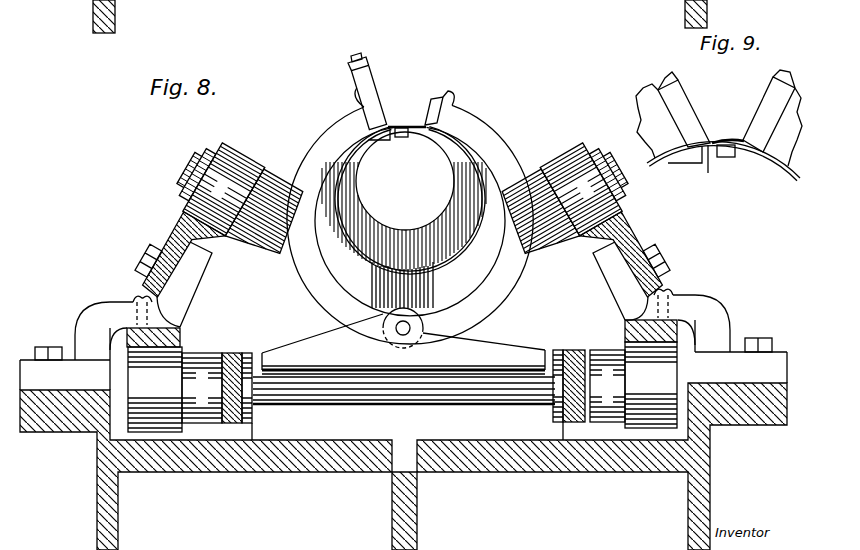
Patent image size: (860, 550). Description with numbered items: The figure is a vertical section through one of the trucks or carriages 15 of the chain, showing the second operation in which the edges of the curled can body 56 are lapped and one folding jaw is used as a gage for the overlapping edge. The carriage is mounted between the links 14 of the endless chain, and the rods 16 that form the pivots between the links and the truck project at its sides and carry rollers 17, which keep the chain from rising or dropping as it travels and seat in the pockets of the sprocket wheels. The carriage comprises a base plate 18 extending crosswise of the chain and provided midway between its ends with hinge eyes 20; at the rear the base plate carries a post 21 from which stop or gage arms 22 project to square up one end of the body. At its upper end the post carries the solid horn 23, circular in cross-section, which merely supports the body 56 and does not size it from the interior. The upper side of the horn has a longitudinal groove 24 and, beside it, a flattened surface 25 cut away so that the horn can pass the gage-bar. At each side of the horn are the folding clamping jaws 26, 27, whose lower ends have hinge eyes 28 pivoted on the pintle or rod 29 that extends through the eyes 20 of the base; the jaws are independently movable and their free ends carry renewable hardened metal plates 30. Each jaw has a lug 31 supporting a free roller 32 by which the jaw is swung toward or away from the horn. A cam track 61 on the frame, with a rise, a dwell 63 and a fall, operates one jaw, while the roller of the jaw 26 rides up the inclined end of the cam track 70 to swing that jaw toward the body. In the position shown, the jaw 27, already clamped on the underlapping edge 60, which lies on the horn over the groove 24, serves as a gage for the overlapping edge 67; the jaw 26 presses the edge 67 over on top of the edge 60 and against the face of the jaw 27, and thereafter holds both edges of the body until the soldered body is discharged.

In FIG. 8, the links 14 is at (254, 418).
In FIG. 8, the trucks or carriages 15 is at (282, 347).
In FIG. 8, the rods 16 is at (399, 389).
In FIG. 8, the rollers 17 is at (402, 387).
In FIG. 8, the base plate 18 is at (403, 357).
In FIG. 8, the hinge eyes 20 is at (424, 332).
In FIG. 8, the post 21 is at (418, 284).
In FIG. 8, the stop or gage arms 22 is at (346, 216).
In FIG. 8, the solid horn 23 is at (405, 181).
In FIG. 9, the solid horn 23 is at (781, 168).
In FIG. 8, the longitudinal groove 24 is at (407, 134).
In FIG. 9, the longitudinal groove 24 is at (727, 153).
In FIG. 8, the flattened surface 25 is at (380, 143).
In FIG. 8, the folding clamping jaw 26 is at (332, 113).
In FIG. 9, the folding clamping jaw 26 is at (645, 84).
In FIG. 8, the folding clamping jaw 27 is at (478, 113).
In FIG. 9, the folding clamping jaw 27 is at (779, 80).
In FIG. 8, the hinge eyes 28 is at (378, 318).
In FIG. 8, the pintle or rod 29 is at (397, 329).
In FIG. 8, the hardened metal plates 30 is at (378, 104).
In FIG. 9, the hardened metal plates 30 is at (684, 108).
In FIG. 8, the lug 31 is at (263, 230).
In FIG. 8, the free roller 32 is at (240, 156).
In FIG. 8, the partially-formed cylinder or body 56 is at (364, 252).
In FIG. 9, the partially-formed cylinder or body 56 is at (650, 166).
In FIG. 9, the underlapping edge 60 is at (708, 174).
In FIG. 8, the cam track 61 is at (622, 222).
In FIG. 8, the dwell 63 is at (596, 252).
In FIG. 8, the overlapping edge 67 is at (400, 124).
In FIG. 9, the overlapping edge 67 is at (733, 140).
In FIG. 8, the cam track 70 is at (184, 213).